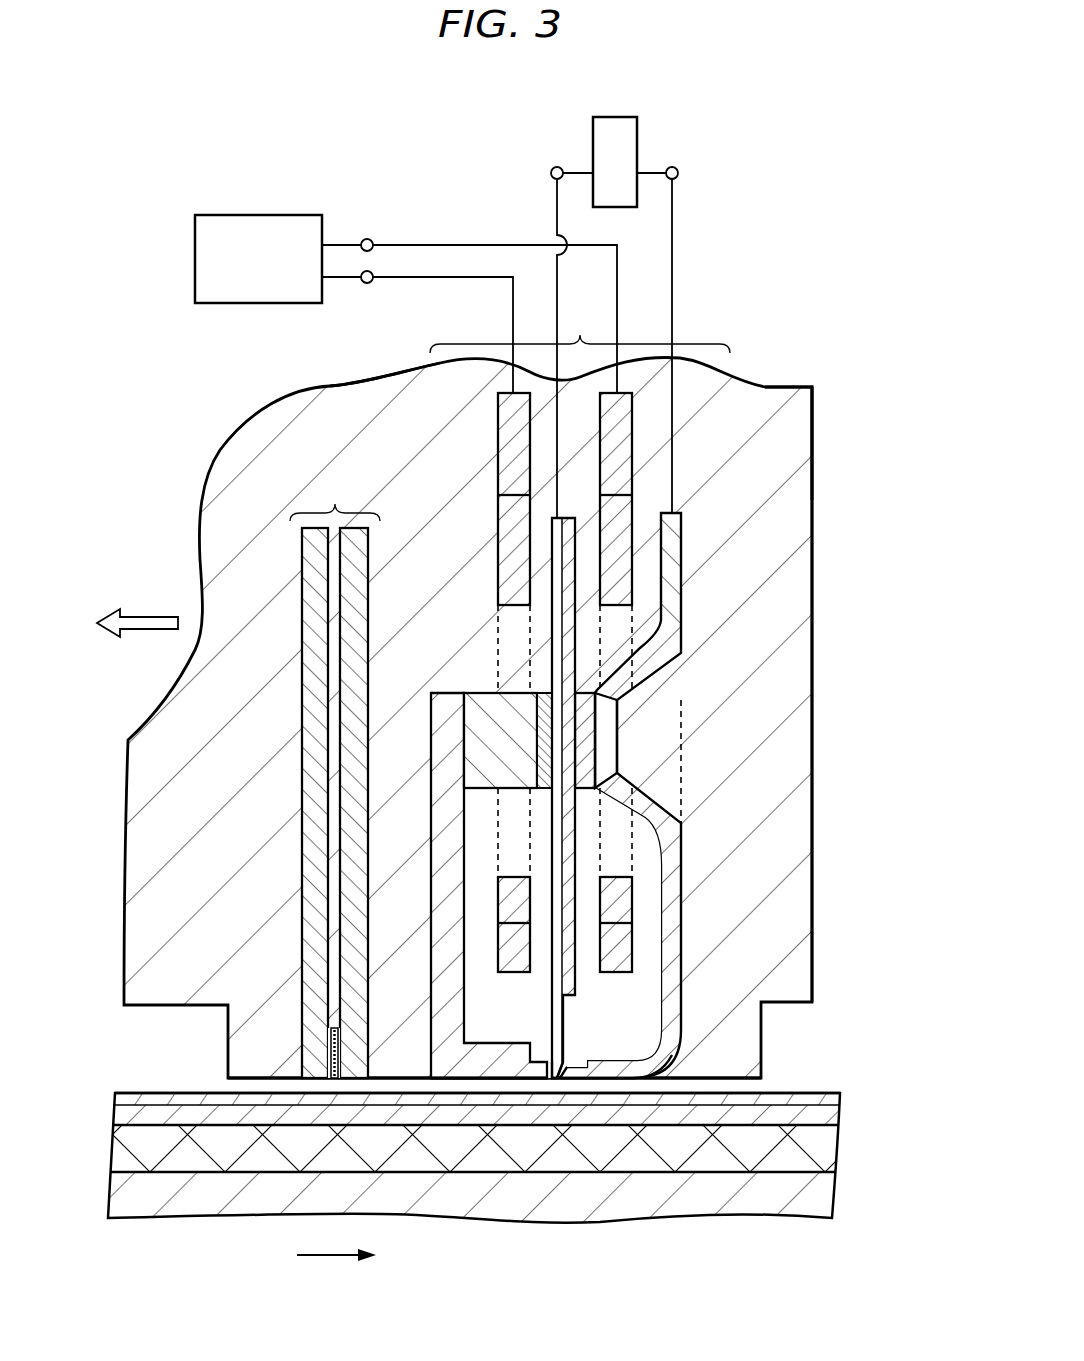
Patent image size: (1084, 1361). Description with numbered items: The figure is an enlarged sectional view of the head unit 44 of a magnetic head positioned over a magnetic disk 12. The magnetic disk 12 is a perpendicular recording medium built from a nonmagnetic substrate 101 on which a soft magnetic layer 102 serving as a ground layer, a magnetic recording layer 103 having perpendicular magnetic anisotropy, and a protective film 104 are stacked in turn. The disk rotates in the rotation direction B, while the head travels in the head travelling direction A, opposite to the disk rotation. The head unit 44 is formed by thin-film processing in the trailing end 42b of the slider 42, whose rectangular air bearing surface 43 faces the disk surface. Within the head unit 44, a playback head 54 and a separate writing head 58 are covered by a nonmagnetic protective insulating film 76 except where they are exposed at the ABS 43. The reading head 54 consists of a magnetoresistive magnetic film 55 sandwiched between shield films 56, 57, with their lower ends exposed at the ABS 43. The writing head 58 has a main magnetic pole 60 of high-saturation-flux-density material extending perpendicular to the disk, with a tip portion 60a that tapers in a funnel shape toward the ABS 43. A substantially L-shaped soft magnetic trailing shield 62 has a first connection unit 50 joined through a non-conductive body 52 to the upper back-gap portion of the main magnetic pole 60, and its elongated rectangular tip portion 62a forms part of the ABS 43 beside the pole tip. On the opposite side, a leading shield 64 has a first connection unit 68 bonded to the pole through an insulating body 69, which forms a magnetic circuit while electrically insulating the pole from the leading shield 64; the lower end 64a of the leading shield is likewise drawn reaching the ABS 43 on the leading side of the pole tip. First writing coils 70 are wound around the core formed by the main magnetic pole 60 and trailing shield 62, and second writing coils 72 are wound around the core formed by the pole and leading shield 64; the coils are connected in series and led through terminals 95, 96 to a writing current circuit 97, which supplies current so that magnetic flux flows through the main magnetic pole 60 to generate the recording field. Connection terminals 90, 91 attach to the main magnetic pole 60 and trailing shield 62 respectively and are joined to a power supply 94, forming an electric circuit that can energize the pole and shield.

The magnetic disk 12 is at (504, 1186).
The slider 42 is at (218, 503).
The trailing end 42b is at (813, 627).
The air bearing surface (ABS) 43 is at (252, 1080).
The head unit 44 is at (322, 390).
The first connection unit 50 is at (606, 740).
The non-conductive body 52 is at (617, 708).
The playback head (reading head) 54 is at (312, 773).
The magnetic film 55 is at (332, 1047).
The shield film 56 is at (312, 737).
The shield film 57 is at (343, 695).
The writing head 58 is at (635, 787).
The main magnetic pole 60 is at (568, 640).
The tip portion 60a is at (557, 1072).
The trailing shield (writing shield) 62 is at (692, 838).
The tip portion 62a is at (633, 1070).
The leading shield 64 is at (438, 832).
The tip end of leading shield 64a is at (473, 1074).
The first connection unit 68 is at (490, 703).
The non-conductive body (insulating body) 69 is at (547, 745).
The first writing coils 70 is at (628, 440).
The second writing coils 72 is at (505, 469).
The protective insulating film 76 is at (796, 396).
The connection terminal 90 is at (556, 166).
The connection terminal 91 is at (673, 166).
The power supply 94 is at (620, 117).
The terminal 95 is at (366, 238).
The terminal 96 is at (367, 284).
The writing current circuit 97 is at (195, 258).
The substrate 101 is at (830, 1193).
The soft magnetic layer 102 is at (836, 1145).
The magnetic recording layer 103 is at (839, 1110).
The protective film 104 is at (840, 1094).
The head travelling direction A is at (143, 622).
The rotation direction B is at (328, 1259).